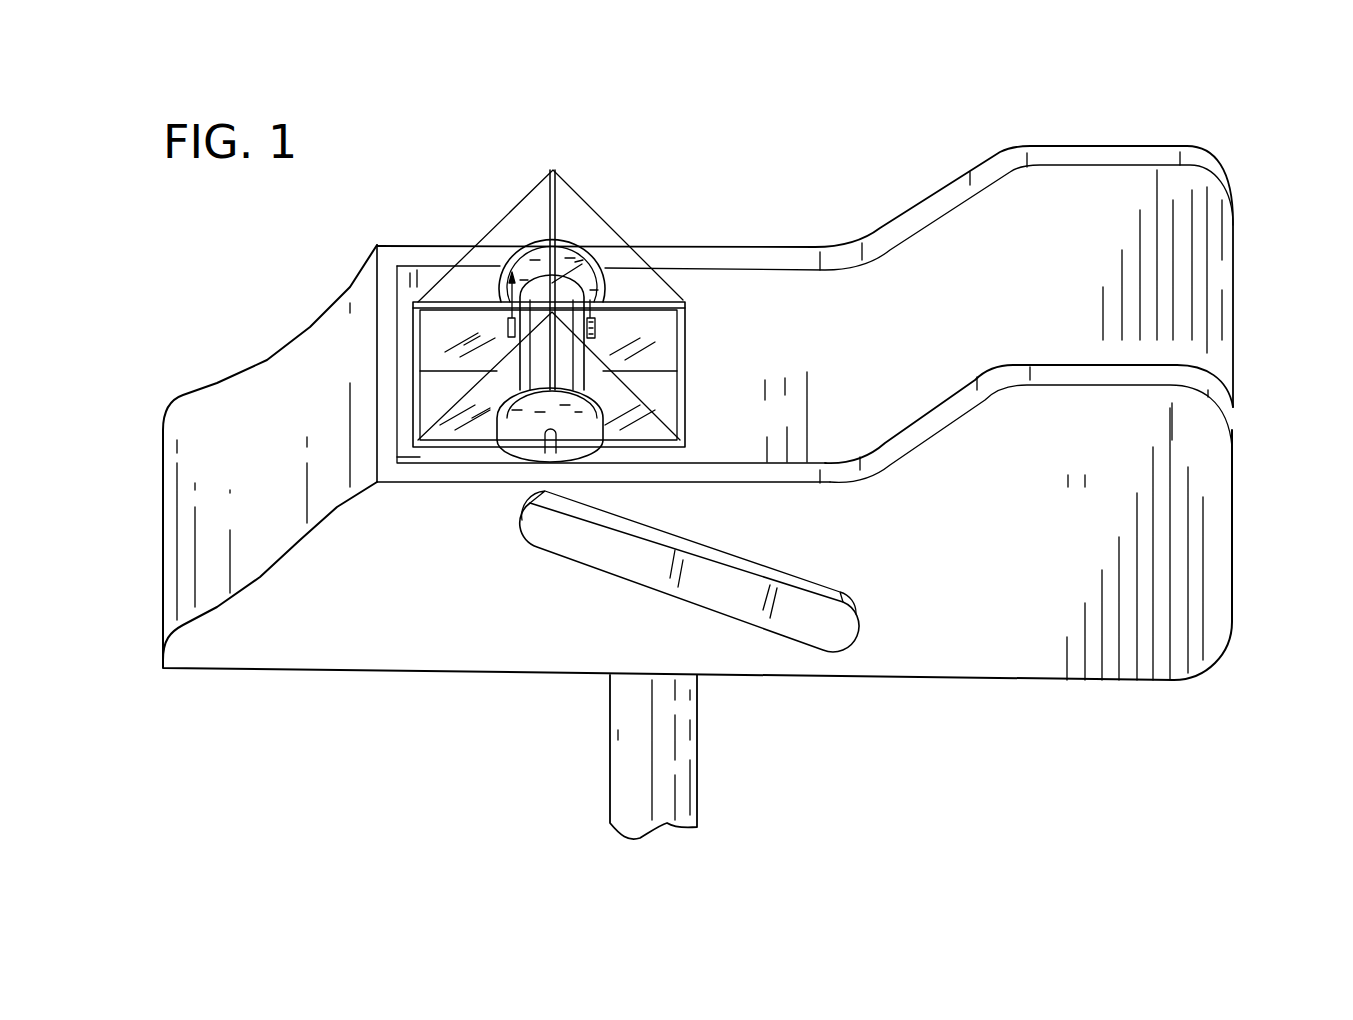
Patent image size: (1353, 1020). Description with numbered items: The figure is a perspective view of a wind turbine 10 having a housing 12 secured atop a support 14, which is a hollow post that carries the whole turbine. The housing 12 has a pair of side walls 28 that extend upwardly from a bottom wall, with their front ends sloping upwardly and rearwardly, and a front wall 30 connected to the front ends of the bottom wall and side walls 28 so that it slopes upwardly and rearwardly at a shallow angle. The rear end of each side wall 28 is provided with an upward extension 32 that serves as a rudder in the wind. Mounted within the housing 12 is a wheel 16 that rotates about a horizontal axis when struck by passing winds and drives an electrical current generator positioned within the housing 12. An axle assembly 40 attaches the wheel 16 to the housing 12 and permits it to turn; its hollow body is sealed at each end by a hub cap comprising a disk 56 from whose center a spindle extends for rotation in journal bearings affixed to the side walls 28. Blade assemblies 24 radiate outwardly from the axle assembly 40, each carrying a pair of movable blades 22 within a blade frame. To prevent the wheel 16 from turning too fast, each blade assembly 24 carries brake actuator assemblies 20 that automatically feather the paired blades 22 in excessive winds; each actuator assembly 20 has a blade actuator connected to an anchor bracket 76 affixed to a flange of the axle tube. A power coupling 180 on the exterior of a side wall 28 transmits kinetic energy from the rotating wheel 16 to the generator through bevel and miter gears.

The wind turbine 10 is at (738, 429).
The housing 12 is at (786, 242).
The support 14 is at (620, 752).
The wheel 16 is at (520, 170).
The brake actuator assembly 20 is at (489, 266).
The blade 22 is at (440, 390).
The blade assembly 24 is at (566, 180).
The side wall 28 is at (1197, 313).
The front wall 30 is at (178, 532).
The upward extension 32 is at (1102, 145).
The axle assembly 40 is at (598, 345).
The disk 56 is at (512, 450).
The anchor bracket 76 is at (510, 281).
The power coupling 180 is at (627, 565).